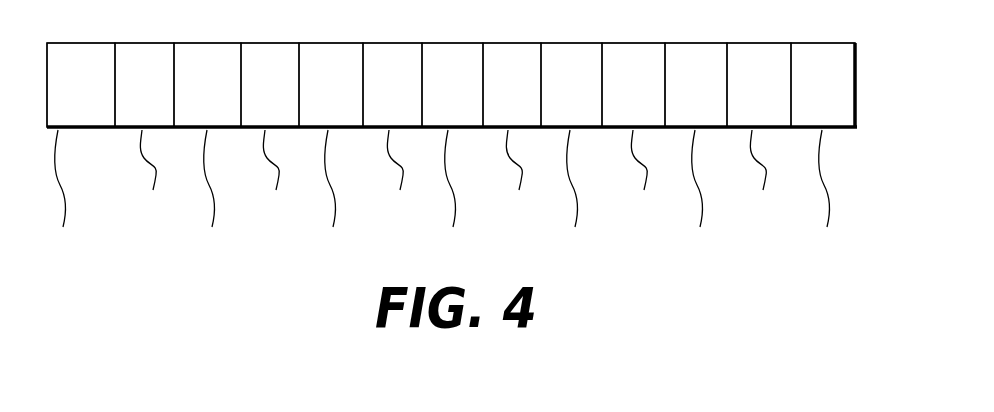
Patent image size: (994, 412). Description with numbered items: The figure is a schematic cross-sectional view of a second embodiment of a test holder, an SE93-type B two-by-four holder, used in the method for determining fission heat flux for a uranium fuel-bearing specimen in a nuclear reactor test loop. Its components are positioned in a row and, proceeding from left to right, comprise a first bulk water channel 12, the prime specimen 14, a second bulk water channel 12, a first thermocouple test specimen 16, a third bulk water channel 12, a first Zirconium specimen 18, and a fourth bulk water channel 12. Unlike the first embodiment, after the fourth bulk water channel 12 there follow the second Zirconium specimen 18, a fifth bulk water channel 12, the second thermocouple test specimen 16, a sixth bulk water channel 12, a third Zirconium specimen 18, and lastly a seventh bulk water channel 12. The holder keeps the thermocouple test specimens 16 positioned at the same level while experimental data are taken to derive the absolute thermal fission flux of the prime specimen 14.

The bulk water channel 12 is at (446, 151).
The prime specimen 14 is at (145, 132).
The thermocouple test specimen 16 is at (453, 132).
The Zirconium specimen 18 is at (577, 132).